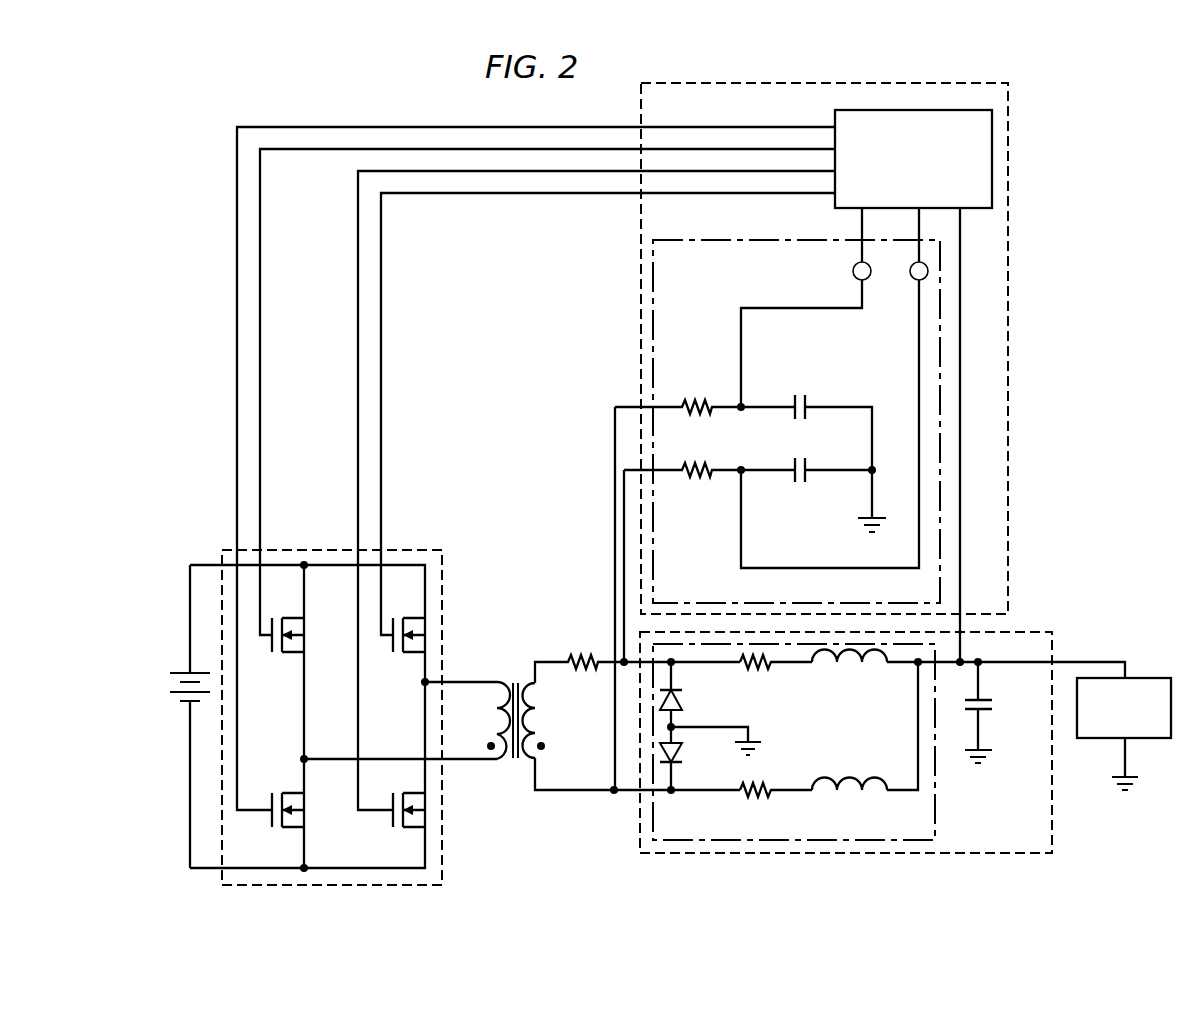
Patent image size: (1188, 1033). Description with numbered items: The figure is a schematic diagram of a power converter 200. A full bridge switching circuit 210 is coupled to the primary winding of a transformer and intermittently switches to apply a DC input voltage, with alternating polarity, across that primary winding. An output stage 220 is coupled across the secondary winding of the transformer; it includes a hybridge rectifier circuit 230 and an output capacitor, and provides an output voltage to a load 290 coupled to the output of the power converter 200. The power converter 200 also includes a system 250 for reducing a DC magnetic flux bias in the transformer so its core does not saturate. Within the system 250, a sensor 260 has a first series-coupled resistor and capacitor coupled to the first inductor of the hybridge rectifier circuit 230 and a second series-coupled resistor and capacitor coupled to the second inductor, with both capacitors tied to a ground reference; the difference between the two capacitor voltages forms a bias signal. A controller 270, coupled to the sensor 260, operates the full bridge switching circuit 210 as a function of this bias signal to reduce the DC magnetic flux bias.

The power converter 200 is at (274, 104).
The full bridge switching circuit 210 is at (428, 548).
The output stage 220 is at (1053, 838).
The hybridge rectifier circuit 230 is at (937, 821).
The system for reducing a DC magnetic flux bias 250 is at (1010, 90).
The sensor 260 is at (669, 240).
The controller 270 is at (834, 117).
The load 290 is at (1156, 678).